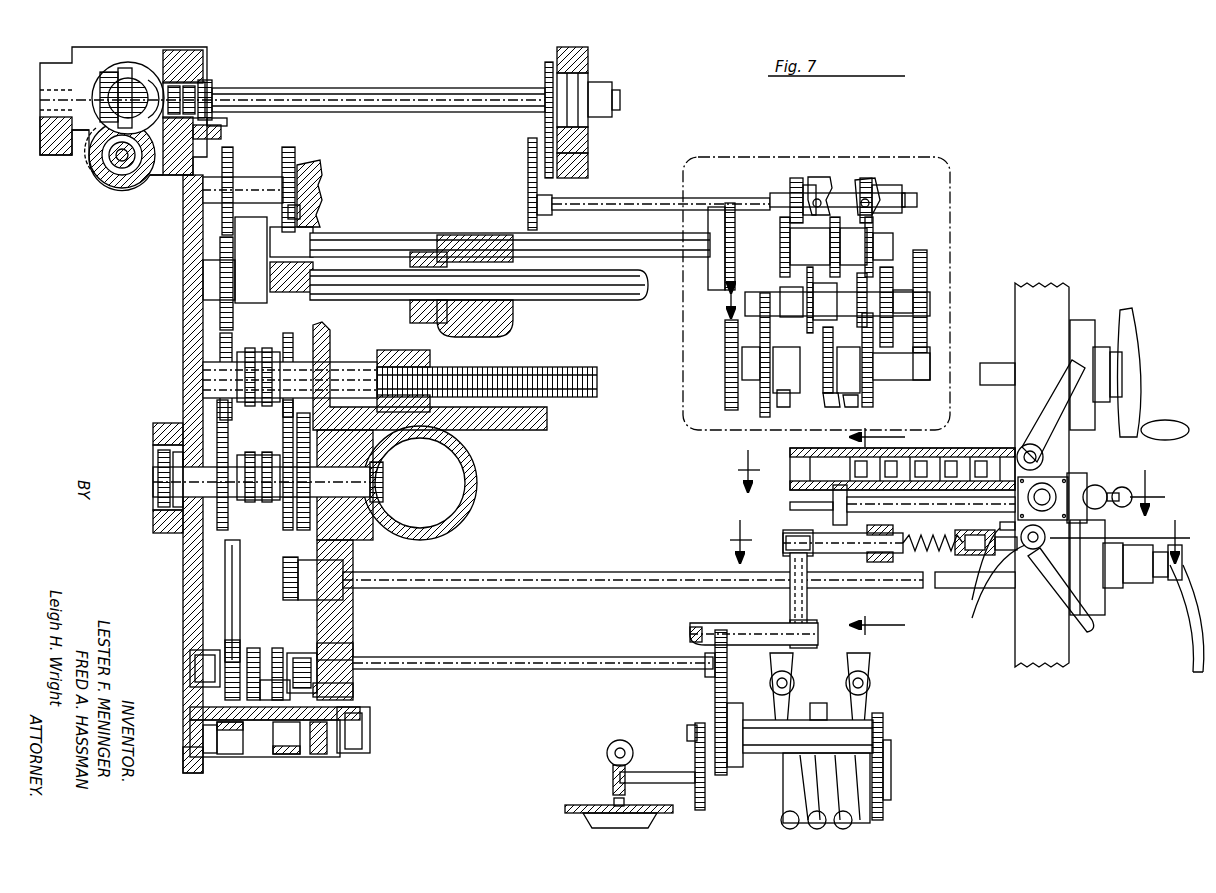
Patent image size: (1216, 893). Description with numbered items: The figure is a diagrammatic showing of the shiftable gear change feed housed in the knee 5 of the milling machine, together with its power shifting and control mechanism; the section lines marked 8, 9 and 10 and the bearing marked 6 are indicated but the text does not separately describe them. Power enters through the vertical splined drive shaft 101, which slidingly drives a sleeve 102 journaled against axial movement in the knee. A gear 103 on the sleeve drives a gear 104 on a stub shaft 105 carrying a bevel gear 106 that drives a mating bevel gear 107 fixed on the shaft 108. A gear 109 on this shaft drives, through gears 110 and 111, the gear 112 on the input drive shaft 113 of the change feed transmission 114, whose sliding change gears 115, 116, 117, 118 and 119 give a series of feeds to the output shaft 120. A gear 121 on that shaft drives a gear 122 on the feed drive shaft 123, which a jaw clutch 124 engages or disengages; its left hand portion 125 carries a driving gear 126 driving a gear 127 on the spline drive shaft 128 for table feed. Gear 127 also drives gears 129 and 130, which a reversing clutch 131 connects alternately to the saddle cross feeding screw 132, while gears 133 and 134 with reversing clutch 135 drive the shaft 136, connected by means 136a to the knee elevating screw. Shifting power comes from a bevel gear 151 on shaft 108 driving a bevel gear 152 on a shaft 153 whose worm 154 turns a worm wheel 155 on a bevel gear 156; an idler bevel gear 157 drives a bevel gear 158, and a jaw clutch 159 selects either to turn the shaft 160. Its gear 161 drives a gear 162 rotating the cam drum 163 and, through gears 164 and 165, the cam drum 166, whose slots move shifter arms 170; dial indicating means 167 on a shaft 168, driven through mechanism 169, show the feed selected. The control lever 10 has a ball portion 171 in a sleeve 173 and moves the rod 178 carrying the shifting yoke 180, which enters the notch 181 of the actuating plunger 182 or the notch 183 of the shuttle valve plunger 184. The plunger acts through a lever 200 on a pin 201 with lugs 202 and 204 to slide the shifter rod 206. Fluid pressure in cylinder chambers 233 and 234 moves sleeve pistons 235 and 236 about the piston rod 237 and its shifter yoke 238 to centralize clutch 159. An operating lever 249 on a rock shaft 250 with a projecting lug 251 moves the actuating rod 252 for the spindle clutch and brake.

The knee 5 is at (185, 590).
The bearing 6 is at (410, 312).
The section line 8 is at (877, 532).
The section line 9 is at (950, 489).
The operating and control lever 10 is at (955, 519).
The vertical splined drive shaft 101 is at (110, 168).
The sleeve 102 is at (120, 170).
The gear 103 is at (100, 150).
The gear 104 is at (198, 62).
The stub shaft 105 is at (203, 74).
The bevel gear 106 is at (126, 88).
The bevel gear 107 is at (86, 74).
The shaft 108 is at (418, 80).
The gear 109 is at (547, 66).
The gear 110 is at (548, 134).
The gear 111 is at (528, 152).
The gear 112 is at (528, 205).
The input drive shaft 113 is at (630, 204).
The change feed transmission 114 is at (775, 160).
The sliding change gear 115 is at (800, 180).
The sliding change gear 116 is at (865, 178).
The sliding change gear 117 is at (790, 286).
The sliding change gear 118 is at (783, 347).
The sliding change gear 119 is at (850, 347).
The output shaft 120 is at (750, 385).
The gear 121 is at (726, 378).
The gear 122 is at (736, 248).
The feed drive shaft 123 is at (510, 245).
The jaw clutch 124 is at (300, 236).
The left hand portion of jaw clutch 125 is at (274, 298).
The driving gear 126 is at (197, 232).
The gear 127 is at (210, 283).
The spline drive shaft 128 is at (563, 278).
The gear 129 is at (220, 350).
The gear 130 is at (283, 345).
The reversing clutch 131 is at (258, 405).
The saddle cross feeding screw 132 is at (562, 372).
The gear 133 is at (185, 540).
The gear 134 is at (300, 527).
The reversing clutch 135 is at (256, 500).
The shaft 136 is at (348, 495).
The connecting means 136a is at (420, 483).
The bevel gear 151 is at (214, 90).
The bevel gear 152 is at (245, 124).
The shaft 153 is at (234, 160).
The worm 154 is at (247, 640).
The worm wheel 155 is at (190, 692).
The bevel gear 156 is at (256, 648).
The idler bevel gear 157 is at (290, 652).
The bevel gear 158 is at (312, 668).
The jaw clutch 159 is at (270, 688).
The shaft 160 is at (495, 664).
The gear 161 is at (728, 657).
The gear 162 is at (720, 770).
The gear shifting cam drum 163 is at (800, 718).
The gear 164 is at (885, 722).
The gear 165 is at (885, 774).
The gear shifting cam drum 166 is at (786, 800).
The dial indicating means 167 is at (583, 822).
The shaft 168 is at (612, 746).
The mechanism 169 is at (697, 748).
The shifter arms 170 is at (822, 180).
The ball portion 171 is at (1093, 485).
The sleeve 173 is at (1073, 477).
The rocking and swinging rod 178 is at (931, 506).
The shifting yoke 180 is at (790, 506).
The operating notch 181 is at (830, 532).
The actuating plunger 182 is at (820, 546).
The actuating notch 183 is at (835, 500).
The shuttle valve plunger 184 is at (818, 447).
The lever 200 is at (790, 533).
The pin 201 is at (808, 605).
The lug 202 is at (786, 543).
The lug 204 is at (805, 640).
The shifter rod 206 is at (718, 623).
The cylinder chamber 233 is at (210, 757).
The cylinder chamber 234 is at (370, 728).
The sleeve piston 235 is at (235, 755).
The sleeve piston 236 is at (330, 757).
The shifter yoke piston rod 237 is at (292, 757).
The shifter yoke 238 is at (355, 712).
The operating lever 249 is at (1095, 630).
The rock shaft 250 is at (1033, 550).
The projecting lug 251 is at (993, 567).
The actuating rod 252 is at (996, 586).